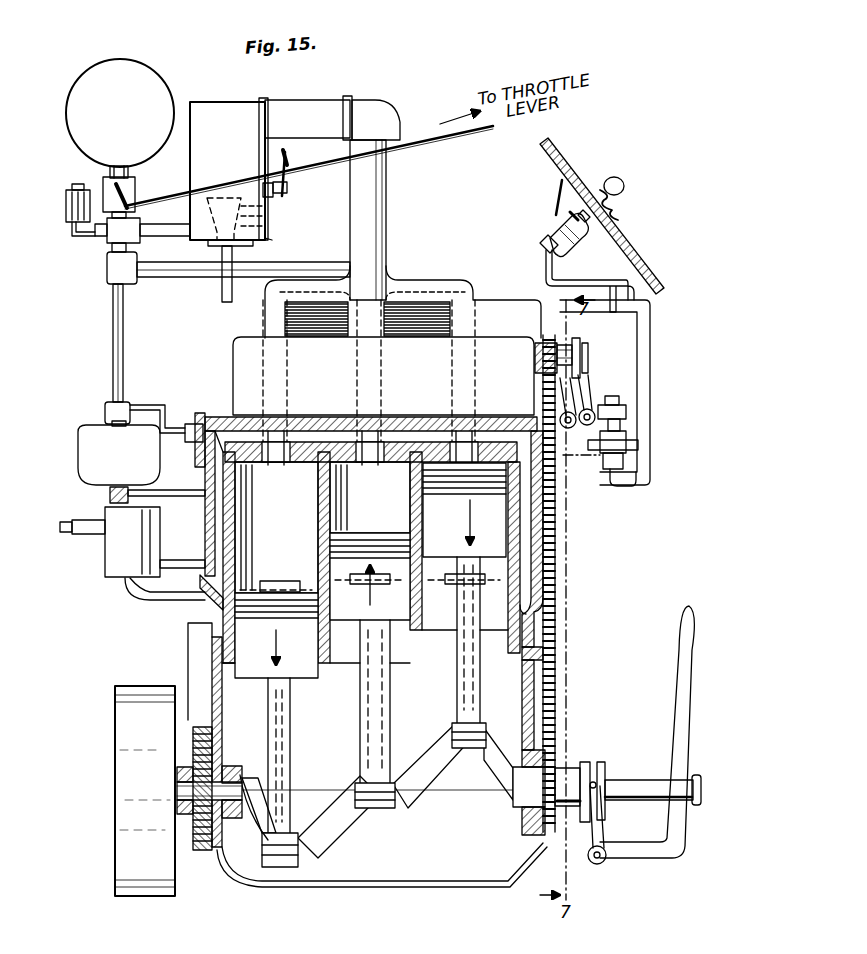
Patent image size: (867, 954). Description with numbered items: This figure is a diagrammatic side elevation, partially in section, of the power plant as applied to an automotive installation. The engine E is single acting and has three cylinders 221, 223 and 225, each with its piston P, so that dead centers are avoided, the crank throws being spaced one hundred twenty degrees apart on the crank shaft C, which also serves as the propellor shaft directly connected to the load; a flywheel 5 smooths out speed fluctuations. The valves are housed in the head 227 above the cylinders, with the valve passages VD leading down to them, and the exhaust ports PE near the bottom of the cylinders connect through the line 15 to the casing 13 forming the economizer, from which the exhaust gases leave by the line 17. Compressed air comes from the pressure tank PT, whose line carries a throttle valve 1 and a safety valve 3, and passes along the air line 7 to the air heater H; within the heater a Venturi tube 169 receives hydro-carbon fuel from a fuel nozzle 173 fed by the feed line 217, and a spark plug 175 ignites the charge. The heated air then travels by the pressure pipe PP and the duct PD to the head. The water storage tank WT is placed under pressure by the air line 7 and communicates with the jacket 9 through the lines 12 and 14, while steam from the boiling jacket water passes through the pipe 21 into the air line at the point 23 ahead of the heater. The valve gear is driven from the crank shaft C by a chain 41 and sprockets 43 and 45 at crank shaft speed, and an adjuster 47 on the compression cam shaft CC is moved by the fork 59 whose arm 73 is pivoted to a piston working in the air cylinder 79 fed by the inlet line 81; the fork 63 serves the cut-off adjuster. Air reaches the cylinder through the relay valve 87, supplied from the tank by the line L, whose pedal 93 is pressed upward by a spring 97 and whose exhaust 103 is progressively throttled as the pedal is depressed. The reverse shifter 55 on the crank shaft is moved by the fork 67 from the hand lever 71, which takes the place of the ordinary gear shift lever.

The throttle valve 1 is at (135, 186).
The safety valve 3 is at (80, 182).
The flywheel 5 is at (115, 814).
The air line 7 is at (113, 330).
The jacket 9 is at (195, 455).
The line 12 is at (178, 578).
The casing 13 is at (118, 568).
The line 14 is at (190, 500).
The exhaust line 15 is at (168, 598).
The exhaust outlet line 17 is at (96, 532).
The steam pipe 21 is at (160, 418).
The steam entry point 23 is at (107, 236).
The chain 41 is at (555, 507).
The sprocket 43 is at (592, 862).
The sprocket 45 is at (545, 343).
The adjuster 47 is at (590, 348).
The reverse shifter 55 is at (636, 800).
The shifter fork 59 is at (598, 410).
The fork 63 is at (580, 395).
The fork 67 is at (603, 832).
The hand lever 71 is at (686, 690).
The arm 73 is at (626, 420).
The air cylinder 79 is at (636, 462).
The inlet line 81 is at (650, 375).
The relay valve 87 is at (552, 226).
The pedal 93 is at (624, 186).
The spring 97 is at (615, 205).
The exhaust line 103 is at (536, 245).
The Venturi tube 169 is at (240, 213).
The fuel nozzle 173 is at (288, 244).
The spark plug 175 is at (284, 196).
The feed line 217 is at (228, 300).
The cylinder 221 is at (276, 527).
The cylinder 223 is at (370, 497).
The cylinder 225 is at (448, 412).
The head 227 is at (387, 364).
The pressure tank PT is at (120, 113).
The water storage tank WT is at (119, 453).
The air heater H is at (229, 172).
The pressure duct PD is at (200, 278).
The pressure pipe PP is at (386, 182).
The valve duct VD is at (276, 465).
The piston P is at (262, 678).
The exhaust port PE is at (298, 575).
The crank shaft C is at (345, 790).
The engine E is at (175, 647).
The air line L is at (570, 278).
The compression cam shaft CC is at (590, 358).